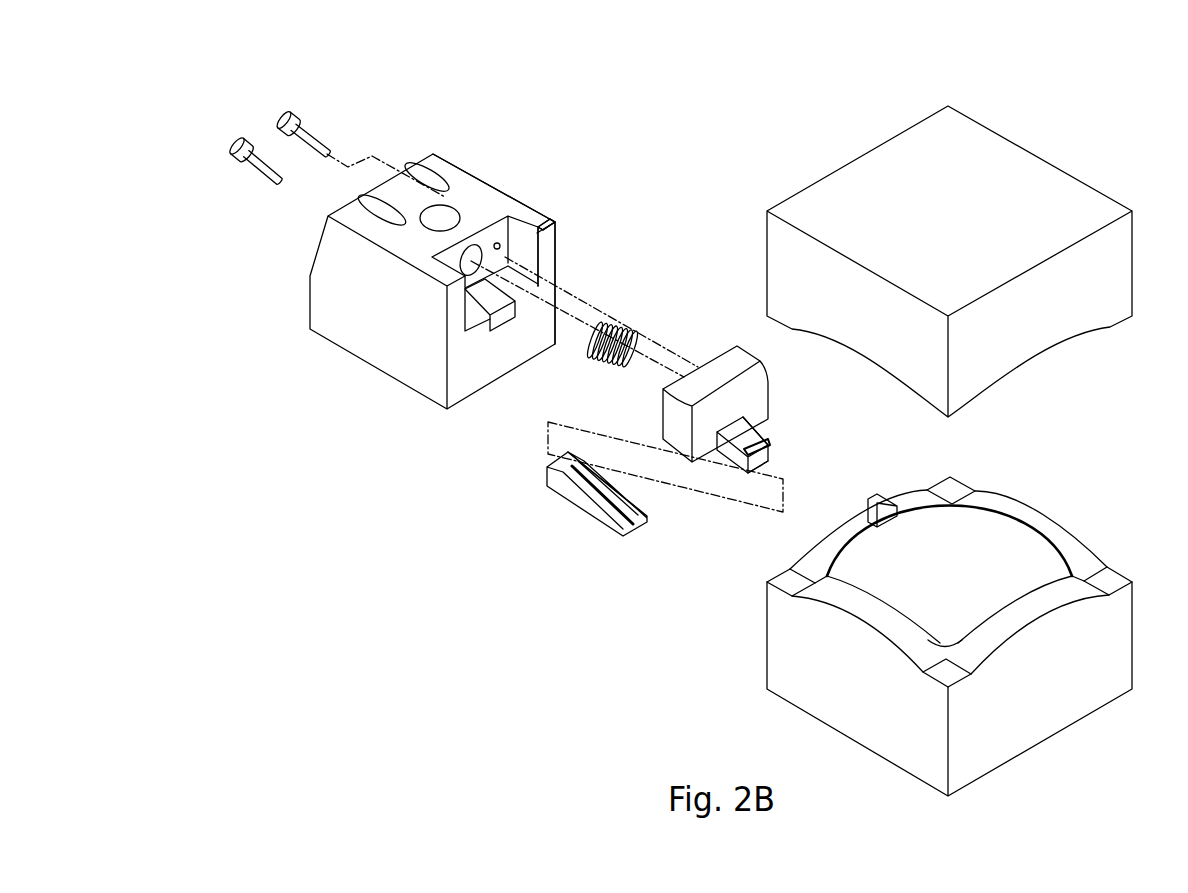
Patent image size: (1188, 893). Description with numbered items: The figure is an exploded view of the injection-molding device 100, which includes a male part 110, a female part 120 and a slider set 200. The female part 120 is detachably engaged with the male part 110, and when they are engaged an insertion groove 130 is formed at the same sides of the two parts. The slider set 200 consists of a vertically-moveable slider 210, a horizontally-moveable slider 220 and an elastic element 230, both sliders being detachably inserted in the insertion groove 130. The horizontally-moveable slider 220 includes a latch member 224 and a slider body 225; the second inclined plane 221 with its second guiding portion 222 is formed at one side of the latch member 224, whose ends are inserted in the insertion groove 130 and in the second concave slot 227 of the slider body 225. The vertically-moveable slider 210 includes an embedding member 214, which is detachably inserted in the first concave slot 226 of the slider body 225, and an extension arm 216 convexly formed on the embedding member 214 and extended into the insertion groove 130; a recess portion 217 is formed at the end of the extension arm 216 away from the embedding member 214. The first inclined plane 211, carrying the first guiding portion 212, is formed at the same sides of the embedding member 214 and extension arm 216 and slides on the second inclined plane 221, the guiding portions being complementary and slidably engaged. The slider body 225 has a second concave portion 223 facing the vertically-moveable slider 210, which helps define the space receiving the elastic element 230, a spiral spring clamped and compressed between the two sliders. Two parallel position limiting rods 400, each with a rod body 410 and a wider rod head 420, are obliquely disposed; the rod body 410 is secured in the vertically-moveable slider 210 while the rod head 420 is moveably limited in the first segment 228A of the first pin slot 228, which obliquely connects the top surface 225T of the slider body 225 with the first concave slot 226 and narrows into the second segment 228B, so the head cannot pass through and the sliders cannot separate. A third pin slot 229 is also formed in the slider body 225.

The injection-molding device 100 is at (187, 72).
The male part 110 is at (1052, 683).
The female part 120 is at (1042, 318).
The insertion groove 130 is at (877, 515).
The slider set 200 is at (592, 672).
The vertically-moveable slider 210 is at (612, 628).
The first inclined plane 211 is at (770, 471).
The first guiding portion 212 is at (778, 447).
The embedding member 214 is at (677, 437).
The extension arm 216 is at (735, 457).
The recess portion 217 is at (775, 437).
The horizontally-moveable slider 220 is at (515, 628).
The second inclined plane 221 is at (600, 497).
The second guiding portion 222 is at (618, 503).
The second concave portion 223 is at (475, 247).
The latch member 224 is at (556, 482).
The slider body 225 is at (467, 380).
The top surface 225T is at (438, 168).
The first concave slot 226 is at (497, 243).
The second concave slot 227 is at (508, 304).
The first pin slot 228 is at (382, 214).
The first segment 228A is at (412, 178).
The second segment 228B is at (528, 228).
The third pin slot 229 is at (455, 218).
The elastic element 230 is at (592, 348).
The position limiting rod 400 is at (393, 93).
The rod body 410 is at (318, 140).
The rod head 420 is at (292, 120).